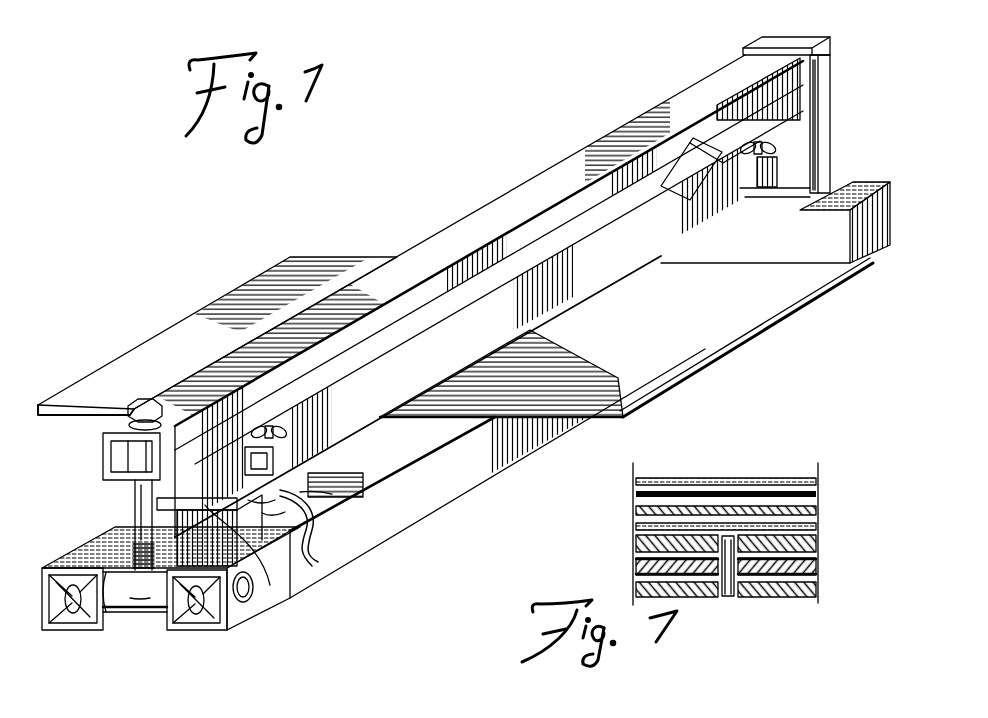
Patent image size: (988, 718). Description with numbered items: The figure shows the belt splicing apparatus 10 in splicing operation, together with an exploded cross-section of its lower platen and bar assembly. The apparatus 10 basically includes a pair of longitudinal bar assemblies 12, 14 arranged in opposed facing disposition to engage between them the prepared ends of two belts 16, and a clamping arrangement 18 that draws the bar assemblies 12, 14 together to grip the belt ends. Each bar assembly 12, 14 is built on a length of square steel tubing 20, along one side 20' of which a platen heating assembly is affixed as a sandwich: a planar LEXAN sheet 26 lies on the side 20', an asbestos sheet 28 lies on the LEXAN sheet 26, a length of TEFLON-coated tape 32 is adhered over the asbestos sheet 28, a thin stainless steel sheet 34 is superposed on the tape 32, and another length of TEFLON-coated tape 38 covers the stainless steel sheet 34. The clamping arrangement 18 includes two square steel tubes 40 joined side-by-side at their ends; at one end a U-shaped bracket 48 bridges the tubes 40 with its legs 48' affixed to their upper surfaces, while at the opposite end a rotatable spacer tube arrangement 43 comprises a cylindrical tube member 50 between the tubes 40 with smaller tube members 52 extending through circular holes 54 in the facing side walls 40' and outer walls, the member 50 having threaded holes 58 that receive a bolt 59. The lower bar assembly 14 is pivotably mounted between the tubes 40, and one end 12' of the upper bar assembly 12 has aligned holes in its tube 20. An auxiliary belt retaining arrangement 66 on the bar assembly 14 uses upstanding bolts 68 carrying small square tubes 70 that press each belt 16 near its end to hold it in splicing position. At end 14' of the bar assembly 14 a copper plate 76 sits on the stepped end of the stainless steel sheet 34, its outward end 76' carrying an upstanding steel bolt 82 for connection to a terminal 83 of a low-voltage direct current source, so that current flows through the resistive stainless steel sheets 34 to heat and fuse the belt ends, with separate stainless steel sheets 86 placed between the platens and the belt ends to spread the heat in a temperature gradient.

In FIG. 1, the belt splicing apparatus 10 is at (543, 125).
In FIG. 1, the bar assembly 12 is at (468, 284).
In FIG. 1, the end of bar assembly 12' is at (106, 420).
In FIG. 1, the bar assembly 14 is at (271, 528).
In FIG. 1, the end of bar assembly 14' is at (288, 541).
In FIG. 1, the belt 16 is at (170, 333).
In FIG. 1, the clamping arrangement 18 is at (373, 549).
In FIG. 1, the square steel tubing 20 is at (500, 197).
In FIG. 7, the side of tubing 20' is at (731, 585).
In FIG. 7, the LEXAN sheet 26 is at (819, 568).
In FIG. 7, the asbestos sheet 28 is at (819, 545).
In FIG. 7, the adhesive-backed tape 32 is at (638, 530).
In FIG. 7, the stainless steel sheet 34 is at (819, 511).
In FIG. 7, the TEFLON resin coated tape 38 is at (636, 493).
In FIG. 1, the square steel tube 40 is at (367, 489).
In FIG. 1, the facing side wall 40' is at (77, 645).
In FIG. 1, the spacer tube arrangement 43 is at (140, 603).
In FIG. 1, the U-shaped steel bracket 48 is at (844, 121).
In FIG. 1, the legs of bracket 48' is at (841, 124).
In FIG. 1, the cylindrical steel tube member 50 is at (158, 612).
In FIG. 1, the cylindrical steel tube members 52 is at (64, 622).
In FIG. 1, the circular holes 54 is at (80, 590).
In FIG. 1, the threaded holes 58 is at (161, 580).
In FIG. 1, the bolt 59 is at (140, 512).
In FIG. 1, the auxiliary belt retaining arrangement 66 is at (660, 244).
In FIG. 1, the bolts 68 is at (749, 146).
In FIG. 1, the square steel tubes 70 is at (597, 280).
In FIG. 1, the copper plate 76 is at (268, 555).
In FIG. 1, the end of copper plate 76' is at (318, 528).
In FIG. 1, the steel bolt 82 is at (336, 494).
In FIG. 1, the terminal 83 is at (334, 515).
In FIG. 7, the stainless steel sheet 86 is at (740, 478).